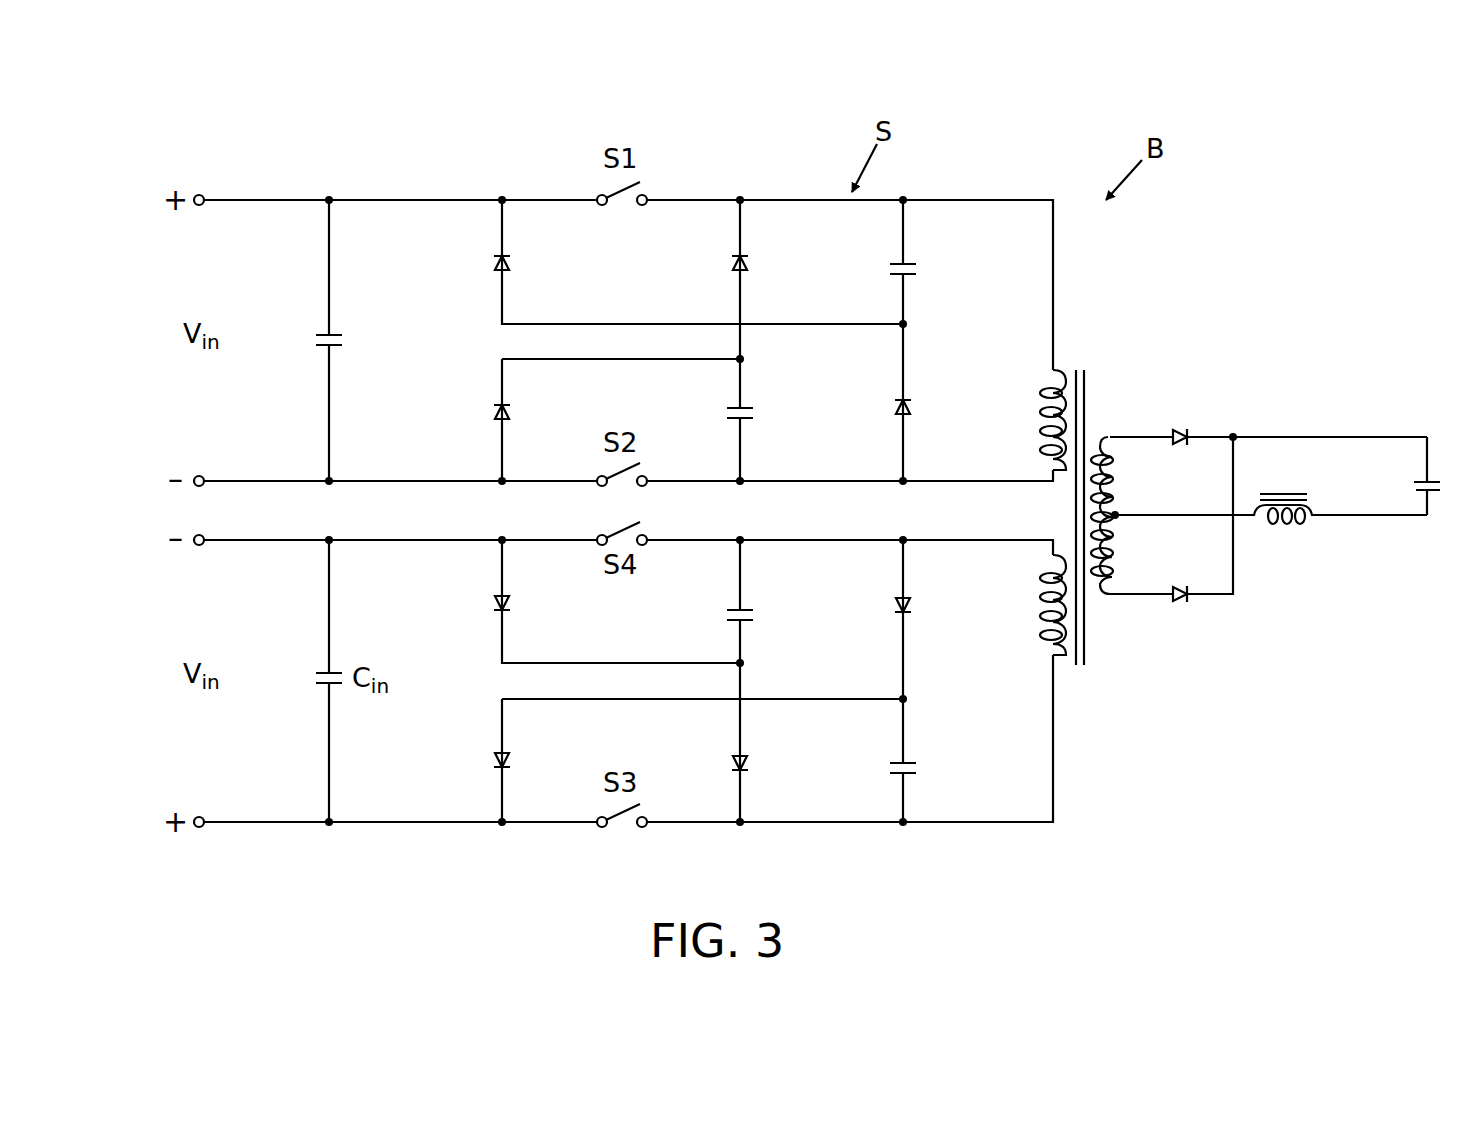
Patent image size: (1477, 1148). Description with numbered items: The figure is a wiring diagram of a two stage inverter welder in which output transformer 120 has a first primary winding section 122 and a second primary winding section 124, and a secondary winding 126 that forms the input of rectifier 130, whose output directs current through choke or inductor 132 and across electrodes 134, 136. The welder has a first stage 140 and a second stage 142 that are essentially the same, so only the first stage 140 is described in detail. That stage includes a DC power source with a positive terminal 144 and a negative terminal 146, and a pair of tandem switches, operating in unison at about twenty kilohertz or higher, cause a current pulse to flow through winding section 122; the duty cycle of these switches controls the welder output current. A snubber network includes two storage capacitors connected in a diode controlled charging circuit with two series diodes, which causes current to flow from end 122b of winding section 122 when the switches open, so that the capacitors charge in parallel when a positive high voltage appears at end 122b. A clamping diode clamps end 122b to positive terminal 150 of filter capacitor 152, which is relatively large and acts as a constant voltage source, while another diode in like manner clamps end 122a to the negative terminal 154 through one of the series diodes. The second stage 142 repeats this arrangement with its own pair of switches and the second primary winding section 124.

The output transformer 120 is at (1073, 485).
The primary winding section 122 is at (1008, 400).
The end of winding 122a is at (1040, 393).
The end of winding 122b is at (1040, 466).
The primary winding section 124 is at (1043, 639).
The secondary winding 126 is at (1108, 500).
The rectifier 130 is at (1199, 430).
The choke or inductor 132 is at (1273, 523).
The electrode 134 is at (1423, 474).
The electrode 136 is at (1437, 492).
The first stage 140 is at (528, 189).
The second stage 142 is at (527, 836).
The positive terminal 144 is at (203, 204).
The negative terminal 146 is at (203, 477).
The positive terminal 150 is at (329, 200).
The filter capacitor 152 is at (317, 334).
The negative terminal 154 is at (333, 478).